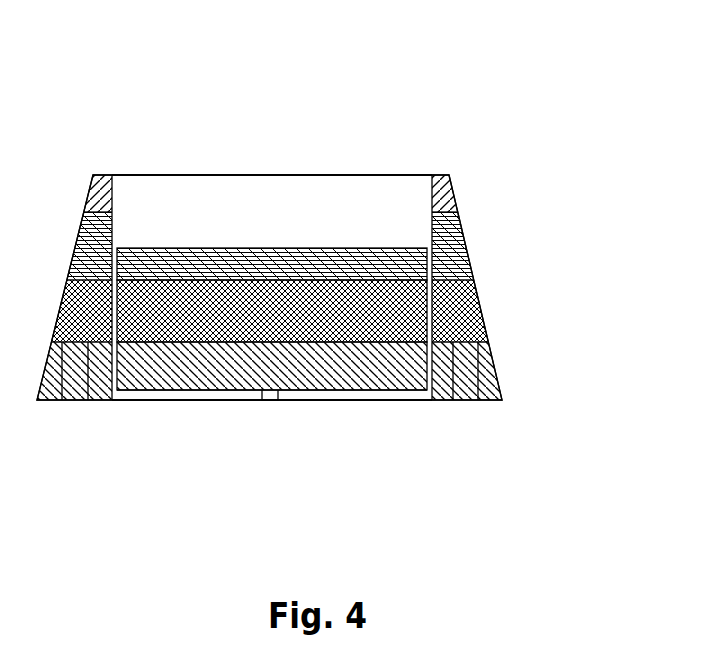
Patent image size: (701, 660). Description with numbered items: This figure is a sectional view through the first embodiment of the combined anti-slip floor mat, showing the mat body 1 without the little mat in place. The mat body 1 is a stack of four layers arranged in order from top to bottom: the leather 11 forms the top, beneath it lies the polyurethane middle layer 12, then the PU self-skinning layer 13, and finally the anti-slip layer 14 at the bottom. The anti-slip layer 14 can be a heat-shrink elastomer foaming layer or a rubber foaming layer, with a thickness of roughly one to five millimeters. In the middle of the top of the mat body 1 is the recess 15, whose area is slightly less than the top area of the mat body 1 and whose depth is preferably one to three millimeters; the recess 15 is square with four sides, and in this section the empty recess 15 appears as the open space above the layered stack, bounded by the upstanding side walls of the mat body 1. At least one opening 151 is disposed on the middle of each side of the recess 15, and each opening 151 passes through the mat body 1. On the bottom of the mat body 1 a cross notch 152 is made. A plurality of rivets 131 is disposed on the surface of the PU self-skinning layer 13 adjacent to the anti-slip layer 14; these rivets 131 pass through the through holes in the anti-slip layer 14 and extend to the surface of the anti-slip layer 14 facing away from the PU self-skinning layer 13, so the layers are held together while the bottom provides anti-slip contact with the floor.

The mat body 1 is at (454, 113).
The leather 11 is at (450, 193).
The polyurethane middle layer 12 is at (467, 257).
The PU self-skinning layer 13 is at (478, 322).
The anti-slip layer 14 is at (493, 390).
The recess 15 is at (302, 200).
The rivets 131 is at (488, 402).
The opening 151 is at (112, 388).
The cross notch 152 is at (243, 392).